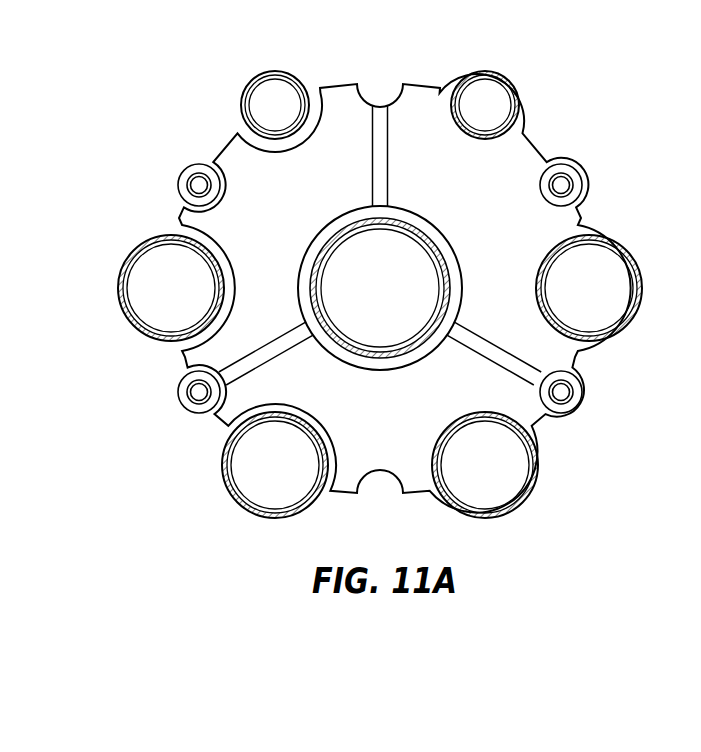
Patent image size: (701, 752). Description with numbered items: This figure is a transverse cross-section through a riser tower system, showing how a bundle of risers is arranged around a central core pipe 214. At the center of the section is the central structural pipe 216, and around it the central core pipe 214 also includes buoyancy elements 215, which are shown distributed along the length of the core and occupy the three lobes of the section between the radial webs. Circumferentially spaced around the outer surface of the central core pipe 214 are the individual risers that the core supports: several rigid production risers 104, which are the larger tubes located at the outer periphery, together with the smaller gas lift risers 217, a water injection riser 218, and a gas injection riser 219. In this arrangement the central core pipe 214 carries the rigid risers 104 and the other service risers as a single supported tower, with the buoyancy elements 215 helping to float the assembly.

The rigid production riser 104 is at (143, 245).
The central core pipe 214 is at (352, 62).
The buoyancy elements 215 is at (262, 211).
The central structural pipe 216 is at (428, 236).
The gas lift riser 217 is at (182, 168).
The water injection riser 218 is at (510, 84).
The gas injection riser 219 is at (257, 88).